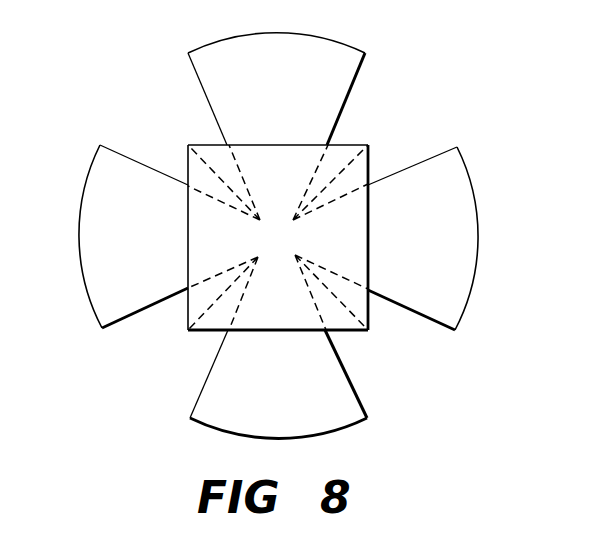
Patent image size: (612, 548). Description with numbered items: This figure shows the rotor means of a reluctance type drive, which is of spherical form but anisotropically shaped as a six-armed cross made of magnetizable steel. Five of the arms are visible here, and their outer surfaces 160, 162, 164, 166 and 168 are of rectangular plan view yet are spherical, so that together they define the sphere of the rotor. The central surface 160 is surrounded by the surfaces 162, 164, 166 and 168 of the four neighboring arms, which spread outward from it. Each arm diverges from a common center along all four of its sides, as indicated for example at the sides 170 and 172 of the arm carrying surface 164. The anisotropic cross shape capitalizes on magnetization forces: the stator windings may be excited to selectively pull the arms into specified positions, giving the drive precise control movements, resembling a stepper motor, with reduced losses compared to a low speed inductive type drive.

The surface 160 is at (343, 145).
The surface 162 is at (477, 208).
The surface 164 is at (279, 396).
The surface 166 is at (83, 283).
The surface 168 is at (322, 36).
The diverging side 170 is at (355, 386).
The diverging side 172 is at (198, 393).